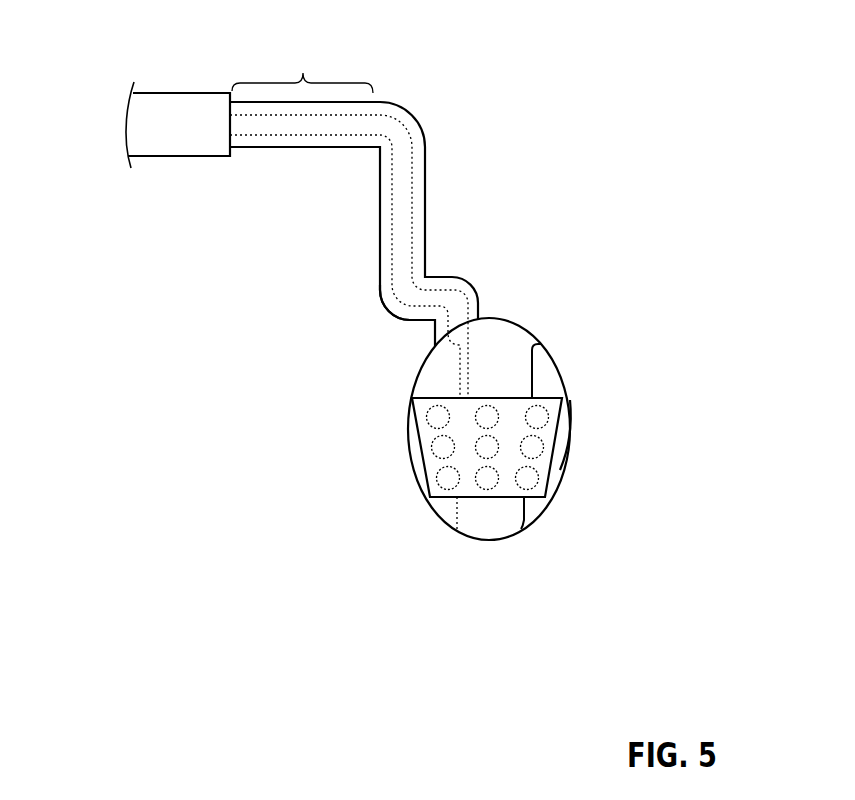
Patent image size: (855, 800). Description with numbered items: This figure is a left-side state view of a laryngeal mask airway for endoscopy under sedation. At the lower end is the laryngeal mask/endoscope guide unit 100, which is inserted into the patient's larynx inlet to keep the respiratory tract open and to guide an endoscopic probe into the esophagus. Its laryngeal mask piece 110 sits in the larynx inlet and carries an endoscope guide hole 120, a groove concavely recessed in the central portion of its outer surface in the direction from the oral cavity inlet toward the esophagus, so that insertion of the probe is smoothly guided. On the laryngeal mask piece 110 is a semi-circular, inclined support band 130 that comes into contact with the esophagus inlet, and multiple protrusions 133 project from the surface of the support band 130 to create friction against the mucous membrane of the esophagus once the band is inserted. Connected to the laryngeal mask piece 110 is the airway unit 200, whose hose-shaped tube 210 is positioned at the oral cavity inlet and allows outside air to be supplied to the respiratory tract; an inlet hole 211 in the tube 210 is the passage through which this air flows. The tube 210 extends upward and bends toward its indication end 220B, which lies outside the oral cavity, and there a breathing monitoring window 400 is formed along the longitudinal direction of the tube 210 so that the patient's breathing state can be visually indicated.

The laryngeal mask/endoscope guide unit 100 is at (552, 349).
The laryngeal mask piece 110 is at (572, 428).
The endoscope guide hole 120 is at (500, 520).
The support band 130 is at (430, 496).
The protrusions 133 is at (437, 420).
The airway unit 200 is at (364, 243).
The tube 210 is at (392, 313).
The inlet hole 211 is at (393, 273).
The indication end 220B is at (302, 63).
The breathing monitoring window 400 is at (176, 160).